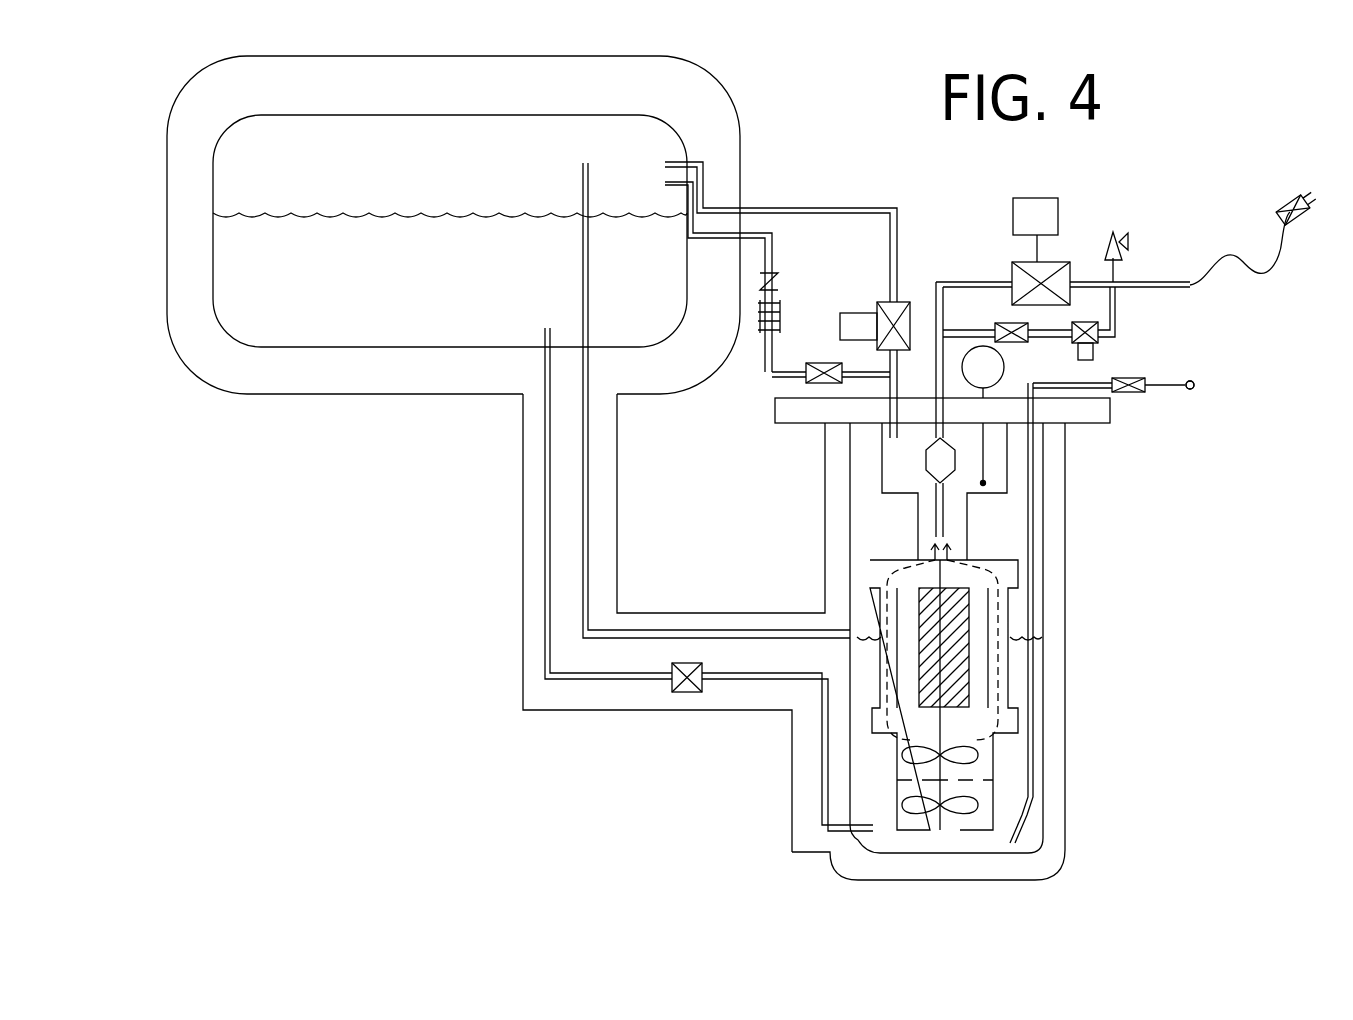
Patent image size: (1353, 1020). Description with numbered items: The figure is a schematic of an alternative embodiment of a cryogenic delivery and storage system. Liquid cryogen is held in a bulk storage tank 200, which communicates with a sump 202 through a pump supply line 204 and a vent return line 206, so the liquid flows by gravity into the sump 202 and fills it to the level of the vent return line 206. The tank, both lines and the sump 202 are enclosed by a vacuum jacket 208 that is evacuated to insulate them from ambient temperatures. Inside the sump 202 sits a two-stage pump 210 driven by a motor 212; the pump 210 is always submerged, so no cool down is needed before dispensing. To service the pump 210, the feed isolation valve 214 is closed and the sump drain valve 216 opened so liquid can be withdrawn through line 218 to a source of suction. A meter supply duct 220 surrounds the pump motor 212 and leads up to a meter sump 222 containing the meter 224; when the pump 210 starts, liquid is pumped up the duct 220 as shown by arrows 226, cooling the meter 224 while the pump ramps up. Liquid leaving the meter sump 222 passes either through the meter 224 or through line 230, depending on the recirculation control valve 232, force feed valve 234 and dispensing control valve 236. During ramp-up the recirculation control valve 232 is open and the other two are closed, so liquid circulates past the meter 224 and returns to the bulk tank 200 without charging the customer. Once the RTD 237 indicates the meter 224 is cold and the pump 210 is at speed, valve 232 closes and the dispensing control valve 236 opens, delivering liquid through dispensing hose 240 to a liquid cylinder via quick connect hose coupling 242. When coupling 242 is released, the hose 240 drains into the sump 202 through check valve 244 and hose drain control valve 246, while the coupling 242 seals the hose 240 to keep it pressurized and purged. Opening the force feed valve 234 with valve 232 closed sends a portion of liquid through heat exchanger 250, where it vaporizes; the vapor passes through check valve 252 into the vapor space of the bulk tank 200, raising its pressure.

The bulk storage tank 200 is at (312, 347).
The sump 202 is at (1045, 732).
The pump supply line 204 is at (632, 680).
The vent return line 206 is at (590, 513).
The vacuum jacket 208 is at (523, 700).
The two-stage pump 210 is at (990, 793).
The motor 212 is at (967, 610).
The feed isolation valve 214 is at (688, 695).
The sump drain valve 216 is at (1130, 392).
The line 218 is at (1160, 383).
The meter supply duct 220 is at (1007, 660).
The meter sump 222 is at (1008, 470).
The meter 224 is at (927, 460).
The arrows 226 is at (887, 693).
The line 230 is at (900, 394).
The recirculation control valve 232 is at (877, 299).
The force feed valve 234 is at (806, 382).
The dispensing control valve 236 is at (1060, 262).
The RTD 237 is at (1004, 366).
The dispensing hose 240 is at (1258, 273).
The quick connect hose coupling 242 is at (1284, 208).
The check valve 244 is at (1007, 322).
The hose drain control valve 246 is at (1098, 346).
The heat exchanger 250 is at (783, 315).
The check valve 252 is at (780, 278).